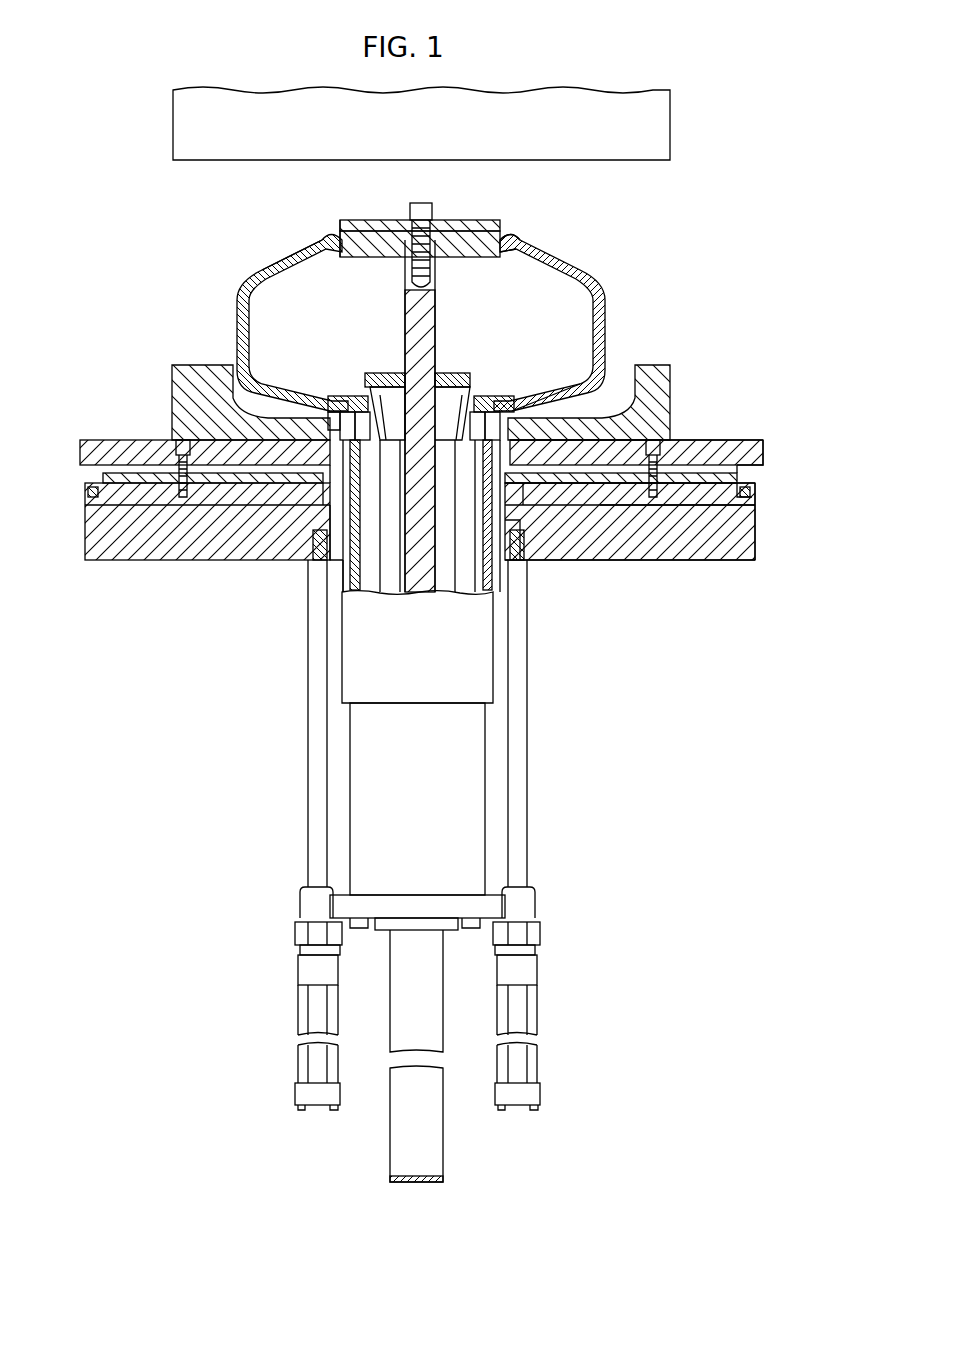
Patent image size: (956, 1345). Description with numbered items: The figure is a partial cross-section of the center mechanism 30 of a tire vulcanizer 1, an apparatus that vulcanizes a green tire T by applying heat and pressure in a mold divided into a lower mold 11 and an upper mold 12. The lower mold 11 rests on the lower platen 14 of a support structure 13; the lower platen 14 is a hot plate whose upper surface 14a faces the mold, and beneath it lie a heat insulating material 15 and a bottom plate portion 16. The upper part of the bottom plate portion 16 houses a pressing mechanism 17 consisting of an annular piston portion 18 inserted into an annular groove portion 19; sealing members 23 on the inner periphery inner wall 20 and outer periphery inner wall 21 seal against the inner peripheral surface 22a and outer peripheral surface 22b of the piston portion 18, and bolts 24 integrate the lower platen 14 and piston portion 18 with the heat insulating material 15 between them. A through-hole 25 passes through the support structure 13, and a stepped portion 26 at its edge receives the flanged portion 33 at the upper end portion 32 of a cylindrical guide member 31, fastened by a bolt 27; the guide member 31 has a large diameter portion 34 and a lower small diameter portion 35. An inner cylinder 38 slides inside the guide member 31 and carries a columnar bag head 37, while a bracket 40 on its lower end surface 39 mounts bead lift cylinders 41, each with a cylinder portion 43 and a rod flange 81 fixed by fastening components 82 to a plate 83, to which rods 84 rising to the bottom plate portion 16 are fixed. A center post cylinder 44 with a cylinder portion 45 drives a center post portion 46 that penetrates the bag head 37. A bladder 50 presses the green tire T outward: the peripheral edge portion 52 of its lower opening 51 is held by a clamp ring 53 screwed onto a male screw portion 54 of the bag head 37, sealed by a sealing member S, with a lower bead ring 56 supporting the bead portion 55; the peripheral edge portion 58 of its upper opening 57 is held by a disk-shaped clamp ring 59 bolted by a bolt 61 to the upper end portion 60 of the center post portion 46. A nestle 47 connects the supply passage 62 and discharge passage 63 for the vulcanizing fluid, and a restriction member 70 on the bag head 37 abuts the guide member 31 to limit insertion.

The tire vulcanizer 1 is at (200, 230).
The upper mold 12 is at (668, 126).
The lower mold 11 is at (648, 376).
The support structure 13 is at (753, 424).
The lower platen 14 is at (750, 428).
The upper surface 14a is at (714, 440).
The heat insulating material 15 is at (739, 478).
The bottom plate portion 16 is at (746, 562).
The pressing mechanism 17 is at (757, 541).
The piston portion 18 is at (663, 546).
The annular groove portion 19 is at (604, 520).
The inner periphery inner wall 20 is at (500, 592).
The outer periphery inner wall 21 is at (703, 541).
The inner peripheral surface 22a is at (513, 566).
The outer peripheral surface 22b is at (750, 505).
The sealing members 23 is at (751, 494).
The bolts 24 is at (181, 440).
The through-hole 25 is at (343, 502).
The stepped portion 26 is at (540, 420).
The bolt 27 is at (310, 420).
The center mechanism 30 is at (548, 683).
The guide member 31 is at (501, 606).
The upper end portion 32 is at (448, 420).
The flanged portion 33 is at (573, 506).
The large diameter portion 34 is at (326, 472).
The small diameter portion 35 is at (343, 573).
The bag head 37 is at (396, 398).
The inner cylinder 38 is at (470, 809).
The lower end surface 39 is at (480, 901).
The bracket 40 is at (300, 902).
The bead lift cylinders 41 is at (300, 1014).
The cylinder portion 43 is at (312, 1062).
The center post cylinder 44 is at (420, 1002).
The cylinder portion 45 is at (428, 968).
The center post portion 46 is at (437, 299).
The nestle 47 is at (451, 398).
The bladder 50 is at (293, 258).
The lower opening 51 is at (362, 408).
The peripheral edge portion 52 is at (348, 404).
The clamp ring 53 is at (480, 410).
The male screw portion 54 is at (494, 410).
The bead portion 55 is at (519, 244).
The lower bead ring 56 is at (514, 408).
The upper opening 57 is at (463, 240).
The peripheral edge portion 58 is at (497, 222).
The clamp ring 59 is at (354, 222).
The upper end portion 60 is at (413, 250).
The bolt 61 is at (422, 203).
The supply passage 62 is at (457, 597).
The discharge passage 63 is at (379, 597).
The restriction member 70 is at (332, 400).
The rod flange 81 is at (300, 951).
The fastening components 82 is at (300, 965).
The plate 83 is at (297, 933).
The rods 84 is at (316, 731).
The sealing member S is at (476, 395).
The green tire T is at (565, 264).